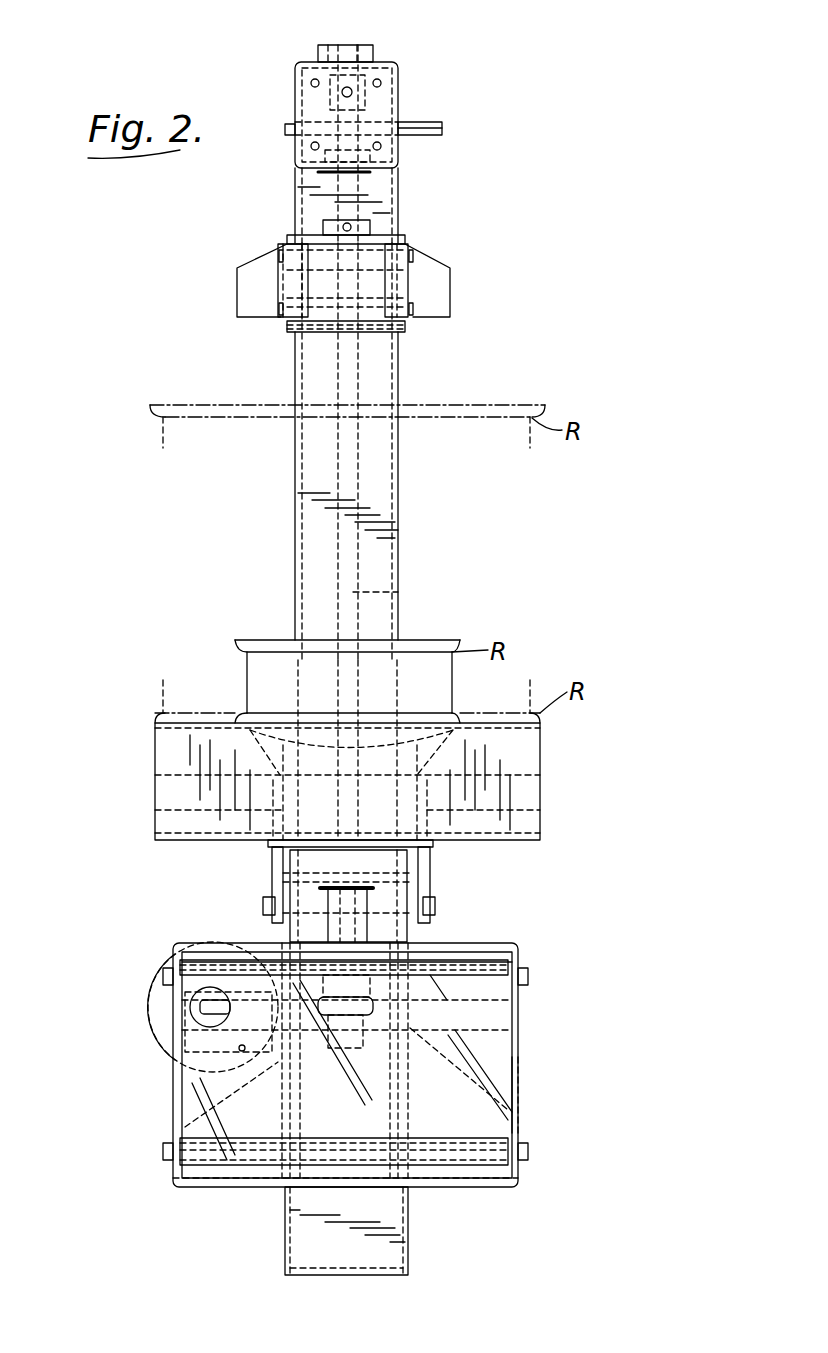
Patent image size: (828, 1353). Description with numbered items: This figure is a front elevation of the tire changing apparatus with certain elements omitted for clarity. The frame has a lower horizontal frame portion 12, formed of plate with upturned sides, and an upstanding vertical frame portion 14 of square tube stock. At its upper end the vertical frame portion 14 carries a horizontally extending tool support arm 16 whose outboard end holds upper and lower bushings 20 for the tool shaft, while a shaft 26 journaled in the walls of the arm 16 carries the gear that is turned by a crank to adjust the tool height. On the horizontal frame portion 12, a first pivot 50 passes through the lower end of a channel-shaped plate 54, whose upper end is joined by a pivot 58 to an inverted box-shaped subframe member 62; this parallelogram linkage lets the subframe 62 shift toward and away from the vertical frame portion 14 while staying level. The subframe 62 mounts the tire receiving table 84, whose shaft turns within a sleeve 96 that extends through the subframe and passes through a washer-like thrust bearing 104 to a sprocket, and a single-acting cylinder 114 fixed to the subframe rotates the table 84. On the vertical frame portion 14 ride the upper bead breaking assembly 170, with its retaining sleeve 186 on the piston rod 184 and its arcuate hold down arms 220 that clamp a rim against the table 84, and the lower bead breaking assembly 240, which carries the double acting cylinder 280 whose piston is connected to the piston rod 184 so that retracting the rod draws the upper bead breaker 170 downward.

The horizontal frame portion 12 is at (487, 1187).
The vertical frame portion 14 is at (383, 530).
The tool support arm 16 is at (382, 88).
The bushings 20 is at (370, 50).
The shaft 26 is at (423, 121).
The first pivot 50 is at (528, 1150).
The channel-shaped plate 54 is at (500, 1080).
The pivot 58 is at (528, 976).
The subframe member 62 is at (523, 945).
The tire receiving table 84 is at (547, 803).
The sleeve 96 is at (367, 935).
The thrust bearing 104 is at (377, 1005).
The single-acting cylinder 114 is at (158, 1015).
The upper bead breaking assembly 170 is at (416, 332).
The piston rod 184 is at (398, 592).
The retaining sleeve 186 is at (370, 228).
The hold down arms 220 is at (250, 292).
The lower bead breaking assembly 240 is at (437, 752).
The double acting cylinder 280 is at (393, 1248).